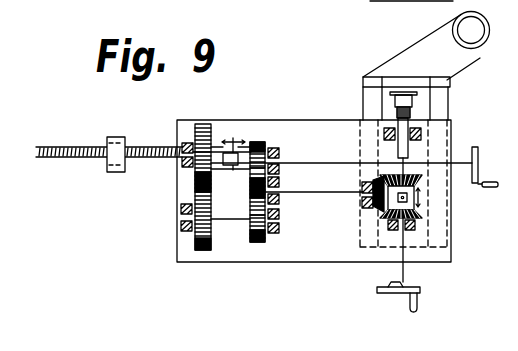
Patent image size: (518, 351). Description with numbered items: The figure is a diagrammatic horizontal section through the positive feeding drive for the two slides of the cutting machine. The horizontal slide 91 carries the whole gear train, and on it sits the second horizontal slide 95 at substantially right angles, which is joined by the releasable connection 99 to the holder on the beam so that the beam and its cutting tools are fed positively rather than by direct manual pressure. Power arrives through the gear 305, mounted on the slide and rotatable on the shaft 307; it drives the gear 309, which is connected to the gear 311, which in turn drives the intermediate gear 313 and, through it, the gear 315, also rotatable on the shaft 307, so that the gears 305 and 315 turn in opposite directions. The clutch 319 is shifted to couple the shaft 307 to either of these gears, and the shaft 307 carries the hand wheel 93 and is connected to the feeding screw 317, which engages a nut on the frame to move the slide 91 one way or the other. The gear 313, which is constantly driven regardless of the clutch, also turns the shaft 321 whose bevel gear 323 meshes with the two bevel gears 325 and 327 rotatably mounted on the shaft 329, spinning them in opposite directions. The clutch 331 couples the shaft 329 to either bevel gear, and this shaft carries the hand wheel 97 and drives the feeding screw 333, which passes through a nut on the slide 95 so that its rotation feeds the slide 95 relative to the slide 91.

The horizontal slide 91 is at (305, 123).
The hand wheel 93 is at (481, 153).
The second horizontal slide 95 is at (392, 1).
The hand wheel 97 is at (389, 293).
The releasable connection 99 is at (480, 58).
The gear 305 is at (203, 124).
The shaft 307 is at (301, 157).
The gear 309 is at (210, 237).
The gear 311 is at (262, 240).
The intermediate gear 313 is at (251, 193).
The gear 315 is at (268, 138).
The feeding screw 317 is at (151, 158).
The clutch 319 is at (232, 142).
The shaft 321 is at (319, 192).
The bevel gear 323 is at (374, 206).
The bevel gear 325 is at (420, 183).
The bevel gear 327 is at (417, 218).
The shaft 329 is at (402, 274).
The clutch 331 is at (422, 203).
The feeding screw 333 is at (394, 112).